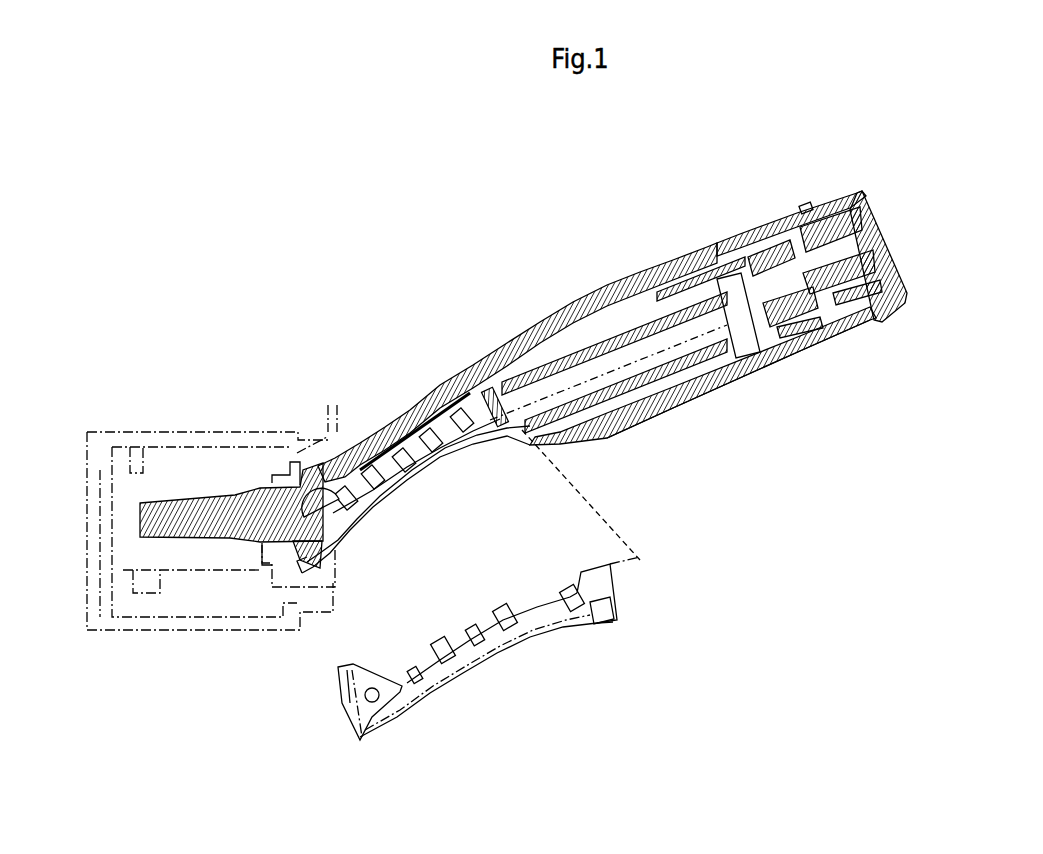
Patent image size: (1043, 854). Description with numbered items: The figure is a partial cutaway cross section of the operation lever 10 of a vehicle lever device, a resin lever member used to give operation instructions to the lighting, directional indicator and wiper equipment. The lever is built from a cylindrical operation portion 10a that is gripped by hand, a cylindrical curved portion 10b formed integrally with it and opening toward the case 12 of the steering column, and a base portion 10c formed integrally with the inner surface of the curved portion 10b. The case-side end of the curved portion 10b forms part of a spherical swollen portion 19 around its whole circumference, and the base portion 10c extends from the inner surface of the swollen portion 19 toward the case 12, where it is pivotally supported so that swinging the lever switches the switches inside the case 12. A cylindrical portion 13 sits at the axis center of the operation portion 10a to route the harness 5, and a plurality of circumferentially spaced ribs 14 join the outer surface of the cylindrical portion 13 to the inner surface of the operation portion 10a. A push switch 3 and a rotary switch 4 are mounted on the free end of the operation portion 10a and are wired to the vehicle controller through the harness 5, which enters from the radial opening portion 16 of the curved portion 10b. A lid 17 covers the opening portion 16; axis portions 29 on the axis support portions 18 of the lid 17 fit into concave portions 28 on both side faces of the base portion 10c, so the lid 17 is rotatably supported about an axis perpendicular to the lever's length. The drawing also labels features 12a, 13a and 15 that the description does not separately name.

The operation lever 10 is at (915, 165).
The push switch 3 is at (888, 245).
The rotary switch 4 is at (760, 222).
The harness 5 is at (662, 388).
The operation portion 10a is at (707, 245).
The curved portion 10b is at (455, 385).
The base portion 10c is at (242, 490).
The case 12 is at (195, 432).
The mating housing portion 12a is at (335, 445).
The cylindrical portion 13 is at (567, 345).
The inner sleeve portion 13a is at (680, 327).
The ribs 14 is at (623, 310).
The retainer 15 is at (520, 372).
The opening portion 16 is at (473, 445).
The lid 17 is at (512, 644).
The axis support portions 18 is at (340, 700).
The spherical swollen portion 19 is at (292, 458).
The concave portions 28 is at (262, 572).
The axis portions 29 is at (373, 684).